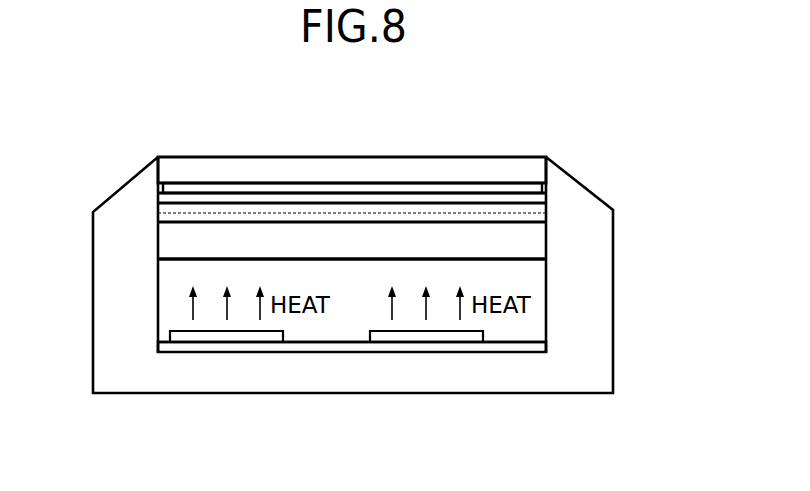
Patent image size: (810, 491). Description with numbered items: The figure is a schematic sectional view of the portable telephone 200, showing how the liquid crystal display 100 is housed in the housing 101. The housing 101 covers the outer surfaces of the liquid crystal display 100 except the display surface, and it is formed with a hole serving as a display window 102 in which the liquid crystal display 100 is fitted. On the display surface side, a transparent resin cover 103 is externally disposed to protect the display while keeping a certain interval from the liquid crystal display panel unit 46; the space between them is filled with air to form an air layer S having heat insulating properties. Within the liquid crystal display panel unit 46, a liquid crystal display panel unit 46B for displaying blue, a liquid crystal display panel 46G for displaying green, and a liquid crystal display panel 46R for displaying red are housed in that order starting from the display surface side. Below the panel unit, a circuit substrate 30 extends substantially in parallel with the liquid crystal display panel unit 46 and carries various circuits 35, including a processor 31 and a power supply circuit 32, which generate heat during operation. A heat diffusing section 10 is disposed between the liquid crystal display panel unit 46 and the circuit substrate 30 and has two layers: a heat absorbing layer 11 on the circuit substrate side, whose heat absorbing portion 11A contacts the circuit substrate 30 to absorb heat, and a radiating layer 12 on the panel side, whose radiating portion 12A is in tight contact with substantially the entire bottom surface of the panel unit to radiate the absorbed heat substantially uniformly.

The portable telephone 200 is at (609, 152).
The liquid crystal display 100 is at (594, 327).
The housing 101 is at (108, 277).
The display window 102 is at (162, 164).
The cover 103 is at (467, 172).
The air layer S is at (276, 171).
The liquid crystal display panel unit 46 is at (449, 202).
The liquid crystal display panel unit for displaying blue 46B is at (558, 195).
The liquid crystal display panel for displaying green 46G is at (558, 205).
The liquid crystal display panel for displaying red 46R is at (558, 217).
The radiating layer 12 is at (538, 240).
The radiating portion 12A is at (355, 228).
The heat diffusing section 10 is at (560, 290).
The heat absorbing layer 11 is at (532, 322).
The heat absorbing portion 11A is at (265, 325).
The circuit substrate 30 is at (318, 348).
The processor 31 is at (220, 341).
The power supply circuit 32 is at (452, 336).
The circuits 35 is at (499, 331).